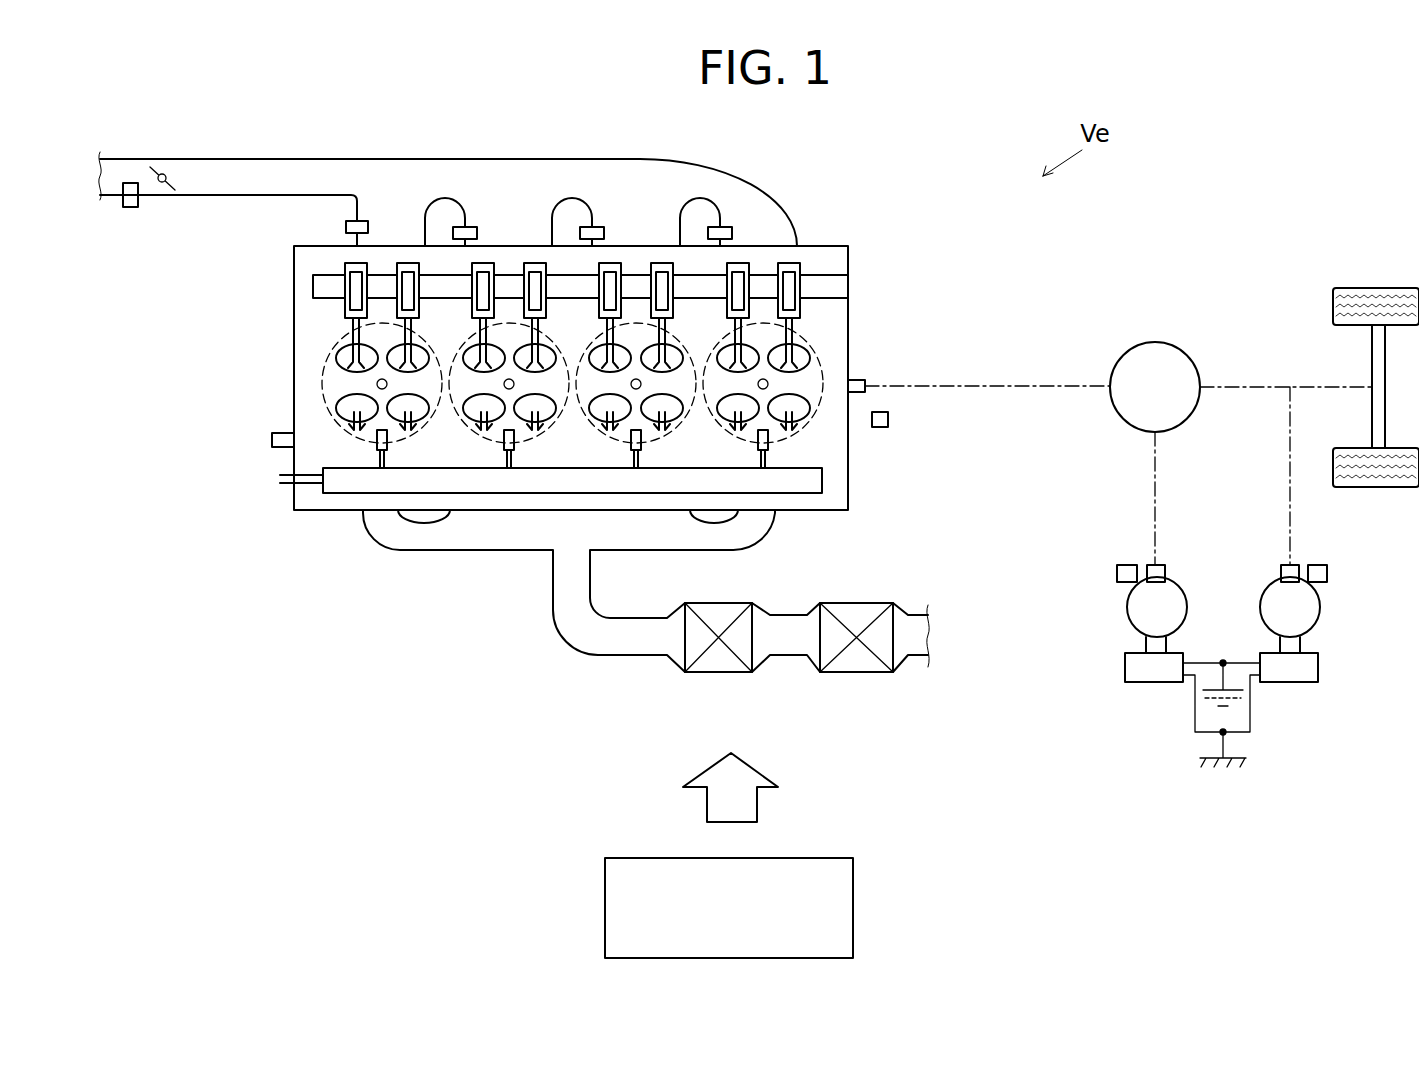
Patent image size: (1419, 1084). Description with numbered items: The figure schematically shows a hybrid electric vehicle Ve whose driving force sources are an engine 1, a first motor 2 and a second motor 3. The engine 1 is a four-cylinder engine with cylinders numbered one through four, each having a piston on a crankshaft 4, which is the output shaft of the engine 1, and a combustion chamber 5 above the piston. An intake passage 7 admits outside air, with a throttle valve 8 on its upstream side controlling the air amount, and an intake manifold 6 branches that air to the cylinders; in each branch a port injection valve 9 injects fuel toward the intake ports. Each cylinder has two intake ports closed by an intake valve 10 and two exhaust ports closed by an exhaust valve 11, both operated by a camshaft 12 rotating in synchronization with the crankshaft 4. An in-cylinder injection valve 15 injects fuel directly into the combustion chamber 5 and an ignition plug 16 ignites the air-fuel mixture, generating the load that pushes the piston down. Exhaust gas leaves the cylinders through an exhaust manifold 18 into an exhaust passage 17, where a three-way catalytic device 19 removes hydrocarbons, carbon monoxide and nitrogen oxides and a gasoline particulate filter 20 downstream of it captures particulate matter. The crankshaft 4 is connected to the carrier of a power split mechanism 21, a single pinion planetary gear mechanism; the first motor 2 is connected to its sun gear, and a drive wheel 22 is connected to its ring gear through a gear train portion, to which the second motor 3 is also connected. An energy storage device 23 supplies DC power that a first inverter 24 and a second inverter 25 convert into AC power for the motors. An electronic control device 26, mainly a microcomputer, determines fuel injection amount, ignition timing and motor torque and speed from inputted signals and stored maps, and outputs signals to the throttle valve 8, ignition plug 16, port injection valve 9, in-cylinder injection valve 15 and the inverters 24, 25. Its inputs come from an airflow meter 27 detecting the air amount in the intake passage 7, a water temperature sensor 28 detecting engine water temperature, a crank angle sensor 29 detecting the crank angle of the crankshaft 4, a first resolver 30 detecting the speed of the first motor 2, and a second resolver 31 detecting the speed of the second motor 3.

The engine 1 is at (856, 168).
The first motor 2 is at (1127, 607).
The second motor 3 is at (1320, 607).
The crankshaft 4 is at (860, 378).
The combustion chamber 5 is at (836, 347).
The intake manifold 6 is at (673, 190).
The intake passage 7 is at (313, 133).
The throttle valve 8 is at (160, 167).
The port injection valve 9 is at (345, 227).
The intake valve 10 is at (560, 345).
The exhaust valve 11 is at (804, 410).
The camshaft 12 is at (837, 286).
The in-cylinder injection valve 15 is at (380, 452).
The ignition plug 16 is at (377, 383).
The exhaust passage 17 is at (632, 678).
The exhaust manifold 18 is at (524, 528).
The three-way catalyst (catalytic device) 19 is at (718, 670).
The gasoline particulate filter (GPF) 20 is at (856, 670).
The power split mechanism 21 is at (1155, 342).
The drive wheel 22 is at (1378, 288).
The energy storage device 23 is at (1245, 695).
The first inverter 24 is at (1160, 688).
The second inverter 25 is at (1320, 668).
The electronic control device (ECU) 26 is at (857, 907).
The airflow meter 27 is at (133, 210).
The water temperature sensor 28 is at (272, 443).
The crank angle sensor 29 is at (892, 421).
The first resolver 30 is at (1116, 575).
The second resolver 31 is at (1328, 575).